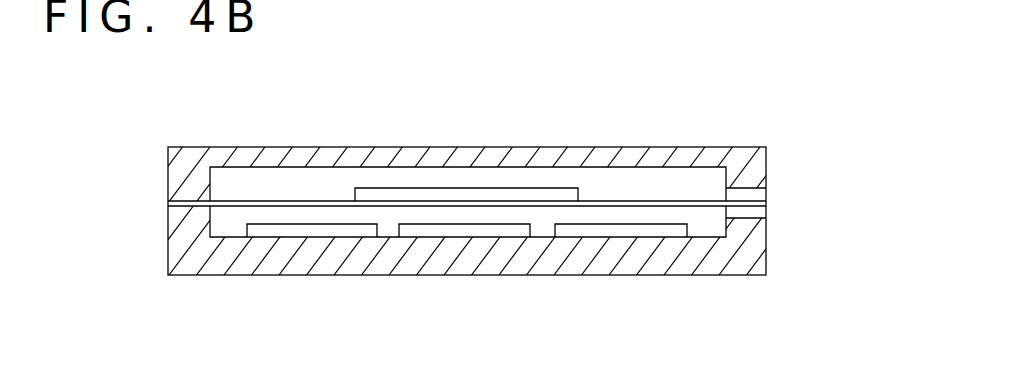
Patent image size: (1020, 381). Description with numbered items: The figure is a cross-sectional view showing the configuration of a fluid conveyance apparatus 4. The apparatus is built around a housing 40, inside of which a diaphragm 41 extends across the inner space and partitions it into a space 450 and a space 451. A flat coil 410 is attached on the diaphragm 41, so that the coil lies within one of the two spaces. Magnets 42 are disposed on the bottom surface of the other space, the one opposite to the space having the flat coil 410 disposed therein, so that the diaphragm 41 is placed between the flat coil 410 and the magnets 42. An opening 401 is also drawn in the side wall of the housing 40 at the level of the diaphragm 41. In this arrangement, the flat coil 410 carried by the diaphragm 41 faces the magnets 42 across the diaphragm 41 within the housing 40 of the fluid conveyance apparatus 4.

The fluid conveyance apparatus 4 is at (170, 110).
The housing 40 is at (194, 158).
The diaphragm 41 is at (208, 206).
The magnets 42 is at (325, 232).
The opening 401 is at (757, 193).
The flat coil 410 is at (513, 197).
The space 450 is at (270, 178).
The space 451 is at (227, 225).